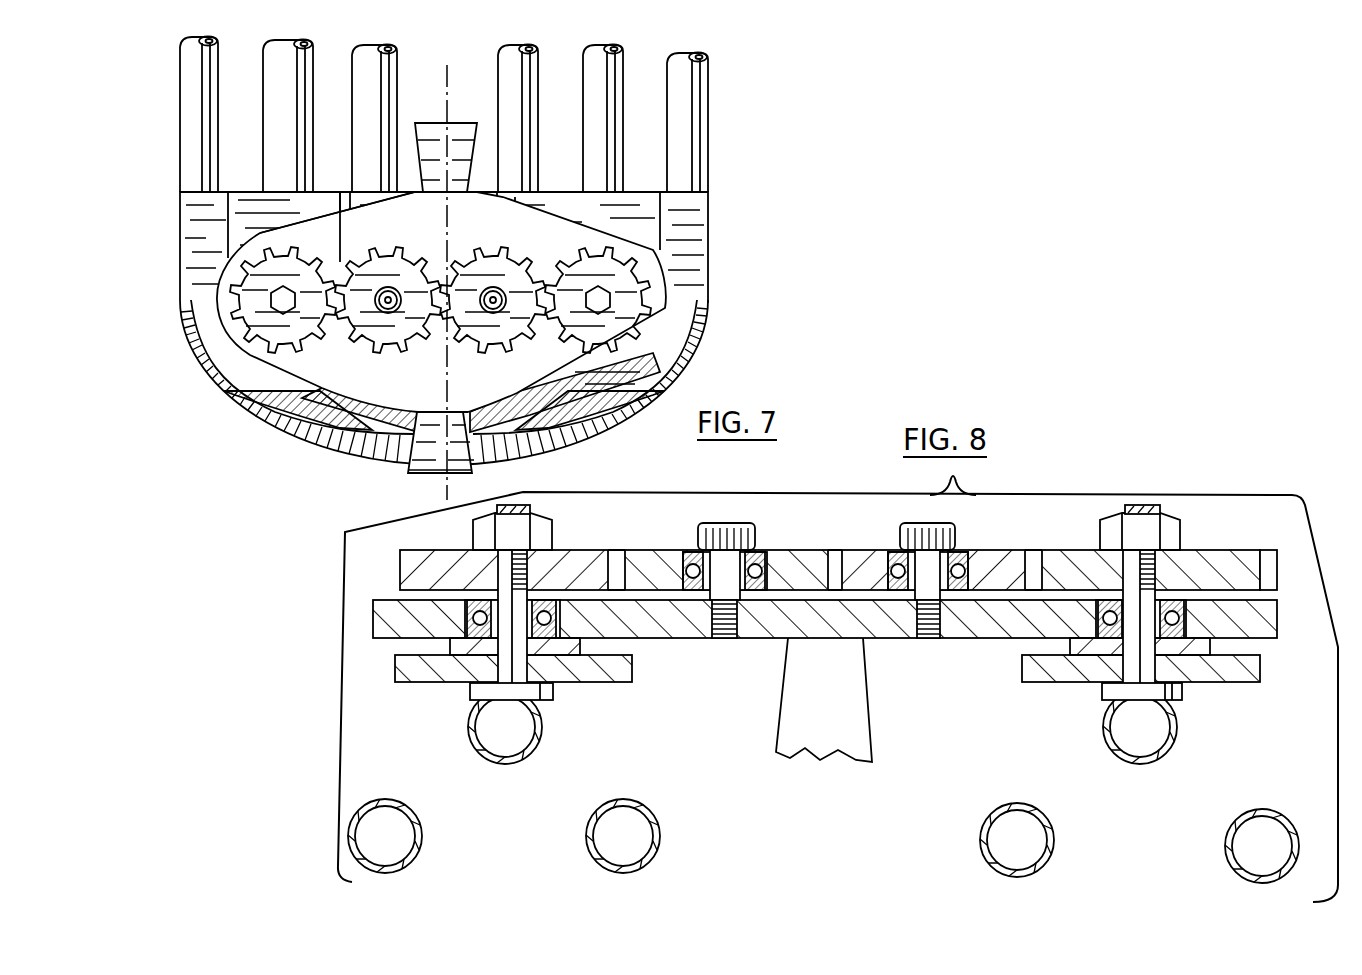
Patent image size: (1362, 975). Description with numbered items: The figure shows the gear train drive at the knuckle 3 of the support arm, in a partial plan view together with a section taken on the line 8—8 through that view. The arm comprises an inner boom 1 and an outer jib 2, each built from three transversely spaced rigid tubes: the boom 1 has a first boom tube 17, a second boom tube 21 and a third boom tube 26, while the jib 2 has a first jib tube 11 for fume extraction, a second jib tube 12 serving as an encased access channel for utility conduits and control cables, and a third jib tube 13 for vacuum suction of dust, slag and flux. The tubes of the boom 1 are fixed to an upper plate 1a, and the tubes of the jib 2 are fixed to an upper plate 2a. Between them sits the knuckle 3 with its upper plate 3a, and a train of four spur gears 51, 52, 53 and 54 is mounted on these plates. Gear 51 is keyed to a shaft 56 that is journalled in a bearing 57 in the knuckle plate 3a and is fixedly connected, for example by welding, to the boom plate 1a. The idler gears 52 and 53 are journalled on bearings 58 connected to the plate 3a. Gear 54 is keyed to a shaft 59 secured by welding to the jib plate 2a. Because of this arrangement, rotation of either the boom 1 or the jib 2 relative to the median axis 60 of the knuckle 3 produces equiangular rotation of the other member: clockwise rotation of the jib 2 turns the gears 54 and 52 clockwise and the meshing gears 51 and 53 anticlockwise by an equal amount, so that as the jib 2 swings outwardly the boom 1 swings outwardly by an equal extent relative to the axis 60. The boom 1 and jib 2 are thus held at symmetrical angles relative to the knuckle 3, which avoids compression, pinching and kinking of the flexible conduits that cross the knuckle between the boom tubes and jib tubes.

In FIG. 7, the inner boom 1 is at (405, 94).
In FIG. 8, the inner boom 1 is at (410, 780).
In FIG. 7, the upper plate of the boom 1a is at (240, 198).
In FIG. 8, the upper plate of the boom 1a is at (412, 678).
In FIG. 7, the outer jib 2 is at (720, 91).
In FIG. 8, the outer jib 2 is at (1247, 792).
In FIG. 8, the upper plate of the jib 2a is at (1232, 672).
In FIG. 8, the knuckle 3 is at (1291, 628).
In FIG. 7, the upper plate of the knuckle 3a is at (318, 242).
In FIG. 8, the upper plate of the knuckle 3a is at (758, 632).
In FIG. 7, the section line 8— 8 is at (150, 290).
In FIG. 7, the first jib tube 11 is at (530, 97).
In FIG. 8, the first jib tube 11 is at (980, 842).
In FIG. 7, the second jib tube 12 is at (616, 97).
In FIG. 8, the second jib tube 12 is at (1118, 753).
In FIG. 7, the third jib tube 13 is at (702, 122).
In FIG. 8, the third jib tube 13 is at (1226, 845).
In FIG. 7, the first boom tube 17 is at (183, 85).
In FIG. 8, the first boom tube 17 is at (422, 838).
In FIG. 7, the second boom tube 21 is at (358, 97).
In FIG. 8, the second boom tube 21 is at (585, 838).
In FIG. 7, the third boom tube 26 is at (272, 97).
In FIG. 8, the third boom tube 26 is at (543, 730).
In FIG. 7, the spur gear 51 is at (223, 280).
In FIG. 8, the spur gear 51 is at (440, 558).
In FIG. 7, the idler gear 52 is at (408, 328).
In FIG. 8, the idler gear 52 is at (655, 560).
In FIG. 7, the idler gear 53 is at (475, 328).
In FIG. 8, the idler gear 53 is at (862, 560).
In FIG. 7, the spur gear 54 is at (690, 302).
In FIG. 8, the spur gear 54 is at (1070, 560).
In FIG. 8, the shaft 56 is at (520, 663).
In FIG. 8, the bearing 57 is at (465, 613).
In FIG. 8, the bearings 58 is at (772, 560).
In FIG. 8, the shaft 59 is at (1130, 662).
In FIG. 7, the median axis of the knuckle 60 is at (437, 487).